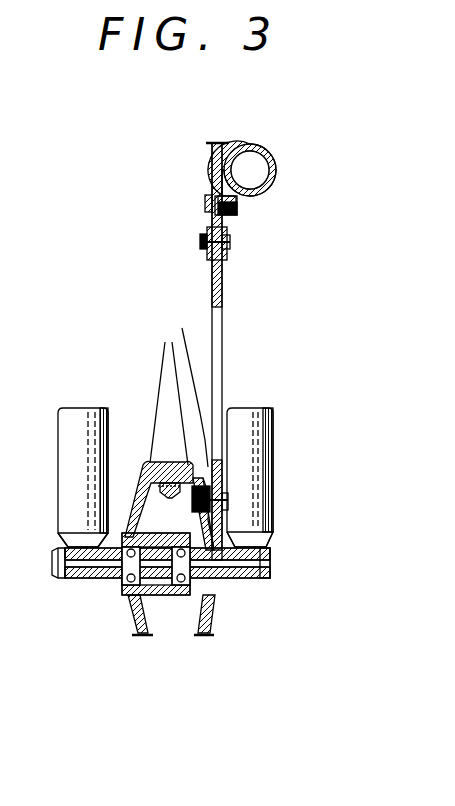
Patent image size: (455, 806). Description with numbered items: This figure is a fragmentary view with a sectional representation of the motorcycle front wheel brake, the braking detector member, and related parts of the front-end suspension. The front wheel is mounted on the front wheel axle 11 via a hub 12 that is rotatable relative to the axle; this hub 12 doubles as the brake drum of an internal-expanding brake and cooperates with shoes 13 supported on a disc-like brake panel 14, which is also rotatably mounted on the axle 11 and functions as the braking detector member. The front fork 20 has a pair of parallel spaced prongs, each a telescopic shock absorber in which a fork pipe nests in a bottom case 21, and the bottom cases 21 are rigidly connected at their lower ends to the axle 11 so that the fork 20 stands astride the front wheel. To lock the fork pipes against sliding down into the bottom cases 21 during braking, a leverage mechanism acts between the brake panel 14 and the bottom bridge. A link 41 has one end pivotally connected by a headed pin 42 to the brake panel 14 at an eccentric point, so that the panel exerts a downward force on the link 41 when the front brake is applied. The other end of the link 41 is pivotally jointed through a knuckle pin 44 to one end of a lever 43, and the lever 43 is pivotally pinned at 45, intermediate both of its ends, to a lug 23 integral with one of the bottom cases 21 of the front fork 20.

The front wheel axle 11 is at (160, 597).
The hub 12 is at (133, 615).
The shoes 13 is at (145, 470).
The brake panel 14 is at (208, 618).
The front fork 20 is at (72, 450).
The bottom case 21 is at (65, 508).
The lug 23 is at (236, 214).
The link 41 is at (222, 312).
The headed pin 42 is at (179, 385).
The lever 43 is at (212, 168).
The knuckle pin 44 is at (200, 241).
The pivot pin 45 is at (237, 205).